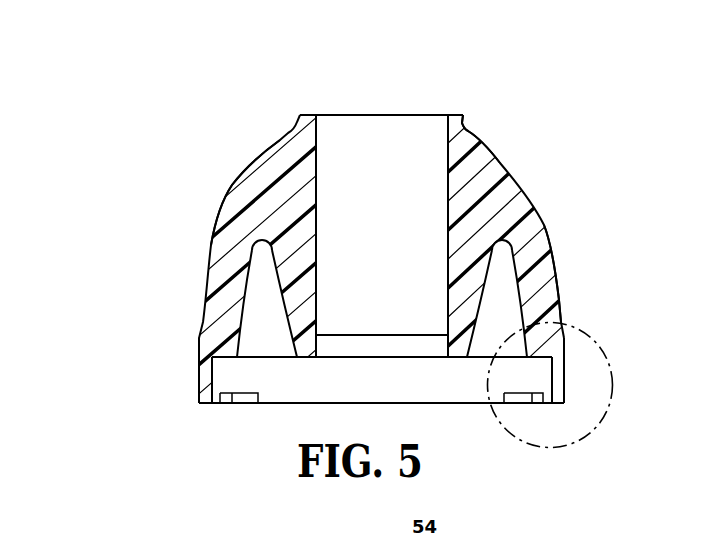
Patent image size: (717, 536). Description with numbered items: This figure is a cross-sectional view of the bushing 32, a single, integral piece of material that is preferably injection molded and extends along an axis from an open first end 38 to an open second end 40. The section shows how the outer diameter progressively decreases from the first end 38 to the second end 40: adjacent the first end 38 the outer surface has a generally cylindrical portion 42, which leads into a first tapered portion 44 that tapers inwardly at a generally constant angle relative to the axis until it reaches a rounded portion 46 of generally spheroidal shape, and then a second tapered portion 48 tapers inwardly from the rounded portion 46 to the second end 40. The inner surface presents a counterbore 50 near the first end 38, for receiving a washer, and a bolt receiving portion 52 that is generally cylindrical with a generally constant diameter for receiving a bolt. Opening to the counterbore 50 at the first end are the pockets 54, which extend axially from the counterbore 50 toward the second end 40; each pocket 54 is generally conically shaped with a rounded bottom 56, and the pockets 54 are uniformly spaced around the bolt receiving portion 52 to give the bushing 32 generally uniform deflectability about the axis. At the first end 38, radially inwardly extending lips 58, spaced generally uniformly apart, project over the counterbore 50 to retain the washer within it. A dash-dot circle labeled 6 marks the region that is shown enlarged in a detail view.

The bushing 32 is at (597, 148).
The first end 38 is at (275, 408).
The second end 40 is at (407, 115).
The cylindrical portion 42 is at (565, 380).
The first tapered portion 44 is at (563, 325).
The rounded portion 46 is at (240, 185).
The second tapered portion 48 is at (472, 126).
The counterbore 50 is at (397, 395).
The bolt receiving portion 52 is at (350, 125).
The pocket 54 is at (258, 302).
The rounded bottom 56 is at (252, 251).
The lip 58 is at (237, 407).
The detail view circle 6 is at (610, 402).